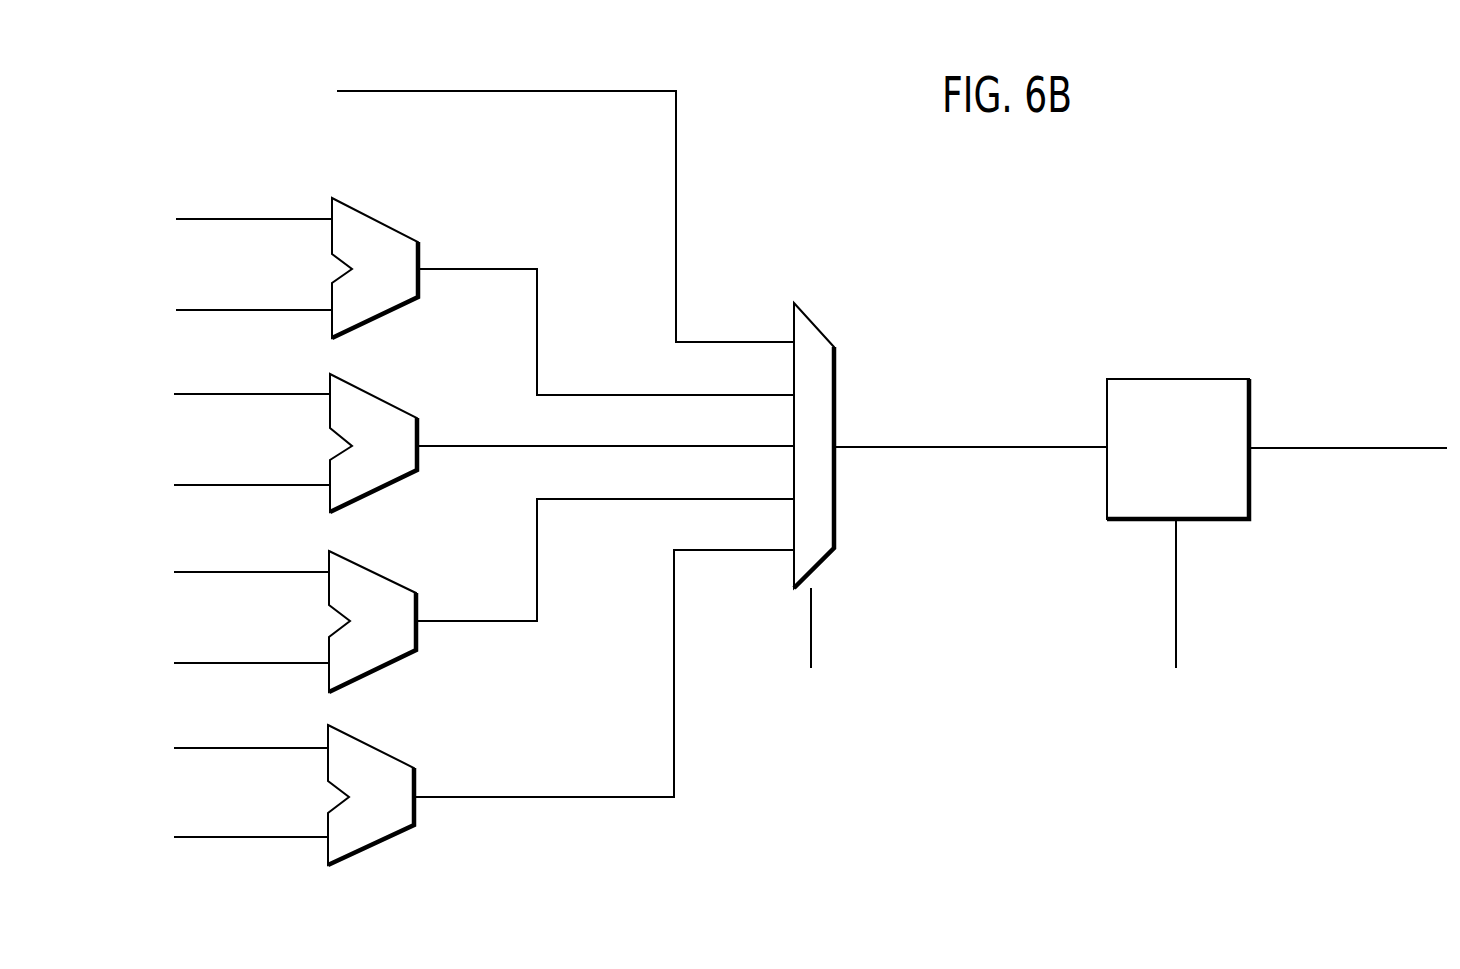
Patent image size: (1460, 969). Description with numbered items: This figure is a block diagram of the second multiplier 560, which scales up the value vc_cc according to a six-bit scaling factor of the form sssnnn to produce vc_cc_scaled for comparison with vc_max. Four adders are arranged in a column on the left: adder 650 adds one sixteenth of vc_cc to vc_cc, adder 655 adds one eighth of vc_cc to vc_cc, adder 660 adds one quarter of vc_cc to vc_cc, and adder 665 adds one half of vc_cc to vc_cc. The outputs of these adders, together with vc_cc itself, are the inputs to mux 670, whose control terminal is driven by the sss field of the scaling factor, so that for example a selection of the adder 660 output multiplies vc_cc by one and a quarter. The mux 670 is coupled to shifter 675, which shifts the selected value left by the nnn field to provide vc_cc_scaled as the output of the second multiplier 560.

The second multiplier 560 is at (1129, 203).
The adder 650 is at (398, 278).
The adder 655 is at (397, 453).
The adder 660 is at (395, 630).
The adder 665 is at (393, 805).
The mux 670 is at (822, 325).
The shifter 675 is at (1162, 379).